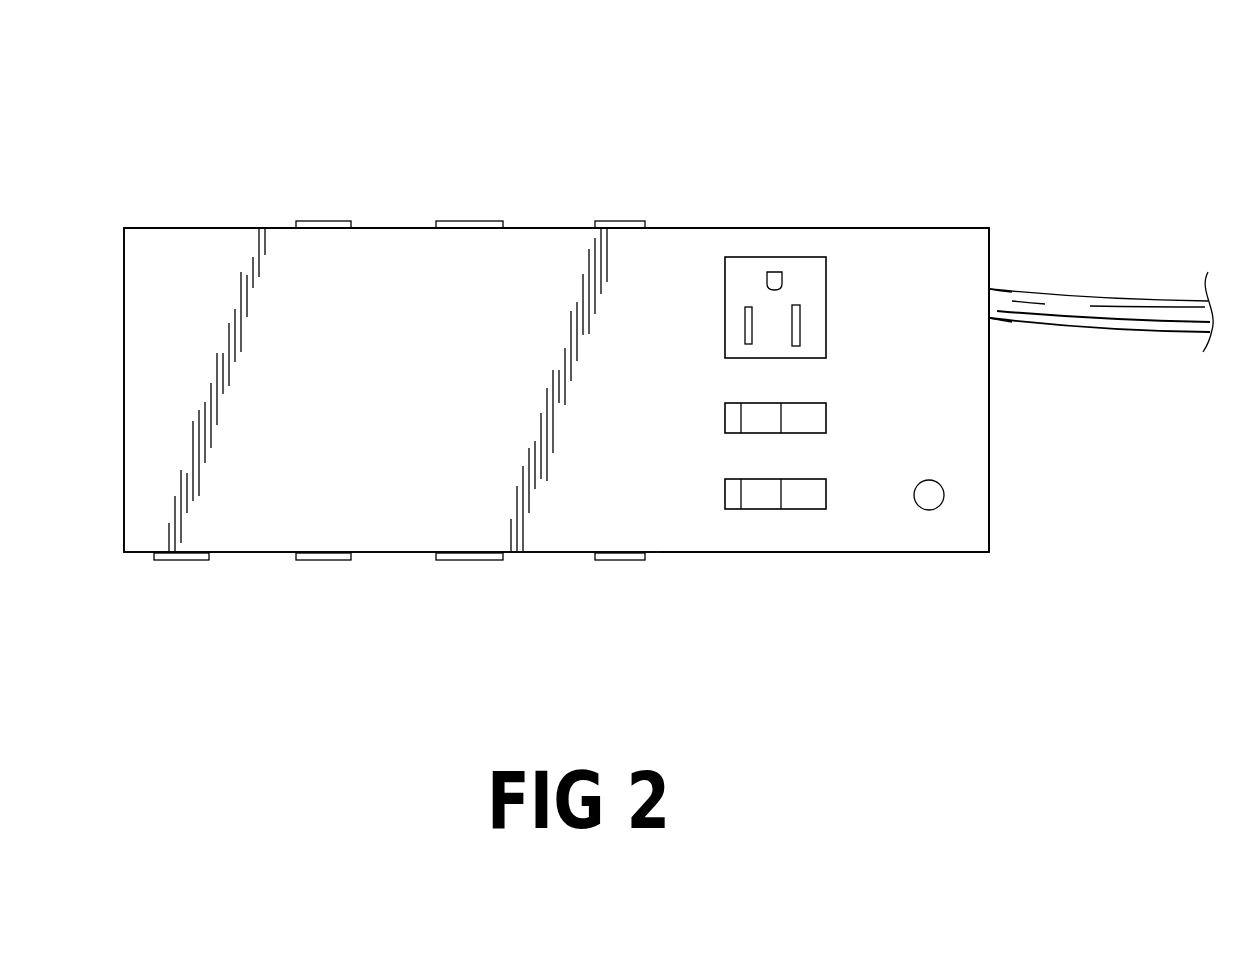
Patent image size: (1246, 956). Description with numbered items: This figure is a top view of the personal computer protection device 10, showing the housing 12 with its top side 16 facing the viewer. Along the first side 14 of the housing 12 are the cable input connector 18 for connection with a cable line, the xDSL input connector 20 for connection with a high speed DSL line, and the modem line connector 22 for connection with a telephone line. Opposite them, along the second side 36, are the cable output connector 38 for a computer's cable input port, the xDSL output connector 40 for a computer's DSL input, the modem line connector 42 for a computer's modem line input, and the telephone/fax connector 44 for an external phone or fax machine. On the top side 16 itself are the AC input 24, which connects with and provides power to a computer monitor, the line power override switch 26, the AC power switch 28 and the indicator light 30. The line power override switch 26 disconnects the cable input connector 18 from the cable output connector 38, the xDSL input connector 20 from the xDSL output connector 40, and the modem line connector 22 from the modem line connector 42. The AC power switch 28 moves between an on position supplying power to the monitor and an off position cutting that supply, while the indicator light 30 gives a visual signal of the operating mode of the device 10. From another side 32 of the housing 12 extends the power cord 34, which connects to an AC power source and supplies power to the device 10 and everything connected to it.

The personal computer protection device 10 is at (1093, 193).
The housing 12 is at (233, 227).
The first side 14 is at (812, 227).
The top side 16 is at (963, 369).
The cable input connector 18 is at (622, 221).
The xDSL input connector 20 is at (478, 221).
The modem line connector 22 is at (323, 221).
The AC input 24 is at (826, 323).
The line power override switch 26 is at (826, 425).
The AC power switch 28 is at (826, 479).
The indicator light 30 is at (935, 500).
The another side 32 is at (989, 354).
The power cord 34 is at (1103, 300).
The second side 36 is at (810, 553).
The cable output connector 38 is at (622, 562).
The xDSL output connector 40 is at (475, 562).
The modem line connector 42 is at (323, 562).
The telephone/fax connector 44 is at (177, 562).